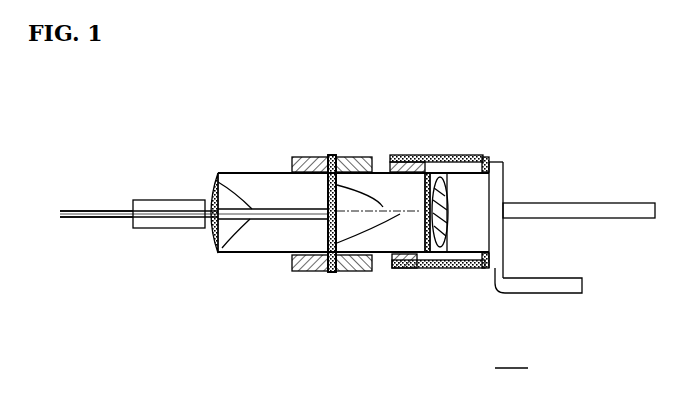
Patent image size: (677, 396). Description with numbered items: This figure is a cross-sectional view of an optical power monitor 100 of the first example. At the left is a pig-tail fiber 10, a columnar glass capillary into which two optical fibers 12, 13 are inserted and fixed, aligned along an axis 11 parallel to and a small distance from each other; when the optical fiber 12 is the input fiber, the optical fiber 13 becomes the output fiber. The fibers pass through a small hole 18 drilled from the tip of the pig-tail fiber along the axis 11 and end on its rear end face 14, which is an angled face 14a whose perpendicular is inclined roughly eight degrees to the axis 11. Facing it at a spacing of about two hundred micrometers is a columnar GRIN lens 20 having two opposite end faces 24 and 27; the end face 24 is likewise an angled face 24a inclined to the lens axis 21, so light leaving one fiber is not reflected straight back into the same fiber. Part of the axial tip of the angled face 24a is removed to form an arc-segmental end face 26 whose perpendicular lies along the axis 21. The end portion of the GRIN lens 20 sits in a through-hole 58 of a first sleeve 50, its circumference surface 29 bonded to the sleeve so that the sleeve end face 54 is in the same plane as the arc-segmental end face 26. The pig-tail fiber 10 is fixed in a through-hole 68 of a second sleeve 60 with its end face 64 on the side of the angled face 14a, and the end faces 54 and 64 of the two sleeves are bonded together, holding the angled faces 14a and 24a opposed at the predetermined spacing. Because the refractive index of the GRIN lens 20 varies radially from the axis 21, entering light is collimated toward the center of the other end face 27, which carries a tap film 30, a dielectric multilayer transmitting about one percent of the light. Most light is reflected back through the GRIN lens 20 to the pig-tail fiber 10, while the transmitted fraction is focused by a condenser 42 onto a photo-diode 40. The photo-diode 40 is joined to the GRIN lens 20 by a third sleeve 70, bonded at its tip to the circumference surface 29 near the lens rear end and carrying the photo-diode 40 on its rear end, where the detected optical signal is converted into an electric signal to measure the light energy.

The optical power monitor 100 is at (511, 360).
The pig-tail fiber 10 is at (224, 237).
The axis 11 is at (169, 239).
The optical fiber 12 is at (96, 185).
The optical fiber 13 is at (194, 245).
The rear end face 14 is at (316, 243).
The angled face 14a is at (317, 259).
The small hole 18 is at (273, 246).
The columnar GRIN lens 20 is at (353, 250).
The axis 21 is at (448, 200).
The end face 24 is at (338, 243).
The angled face 24a is at (348, 266).
The arc-segmental end face 26 is at (383, 207).
The end face 27 is at (428, 194).
The circumference surface 29 is at (397, 151).
The tap film 30 is at (425, 270).
The photo-diode 40 is at (473, 268).
The condenser 42 is at (436, 265).
The first sleeve 50 is at (357, 272).
The end face 54 is at (344, 170).
The through-hole 58 is at (372, 155).
The second sleeve 60 is at (302, 256).
The end face 64 is at (325, 172).
The through-hole 68 is at (298, 176).
The third sleeve 70 is at (403, 270).